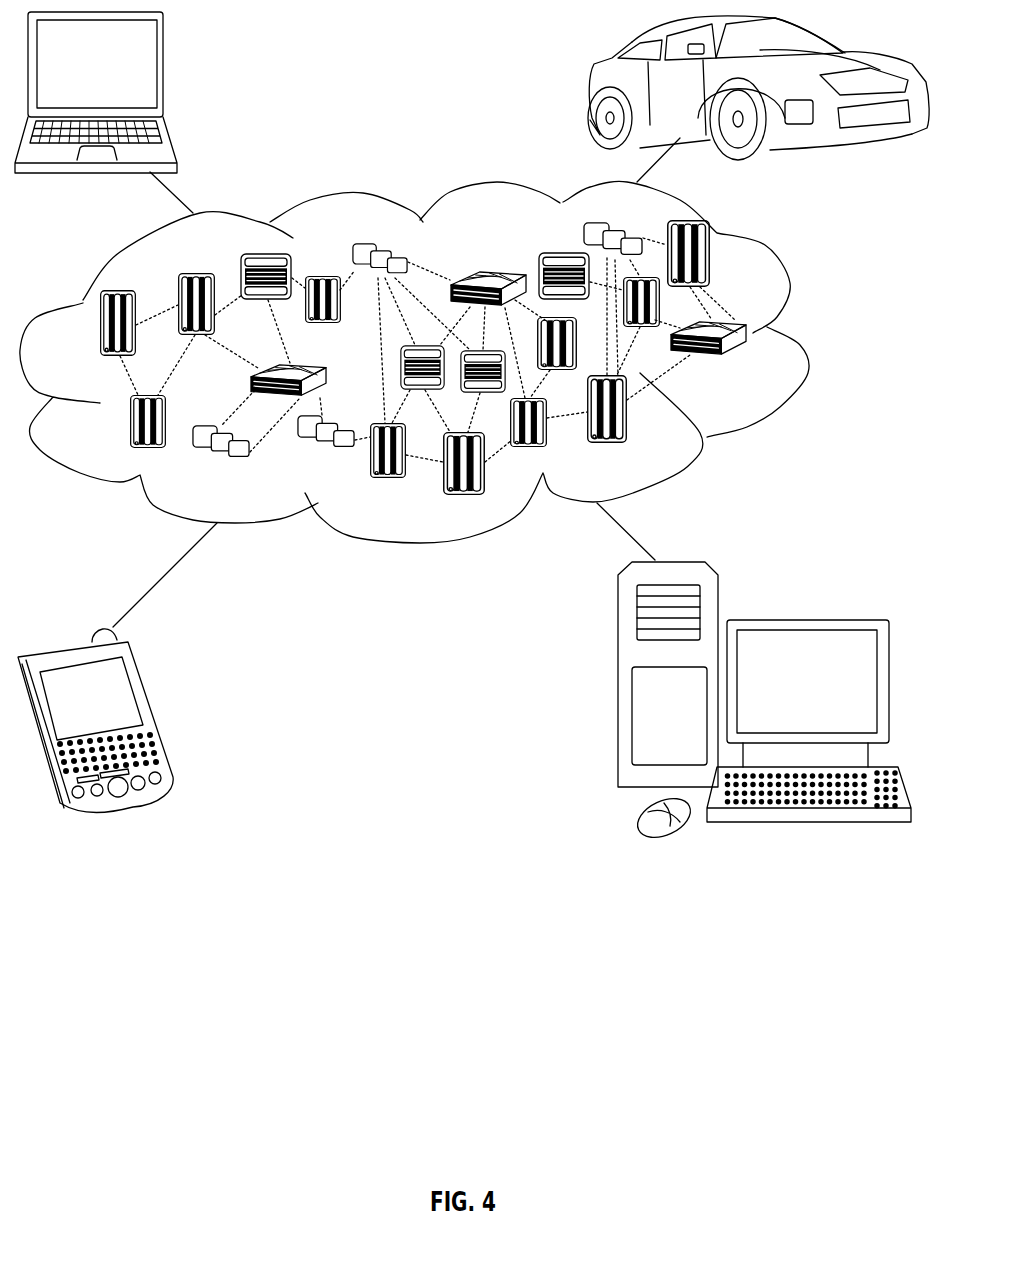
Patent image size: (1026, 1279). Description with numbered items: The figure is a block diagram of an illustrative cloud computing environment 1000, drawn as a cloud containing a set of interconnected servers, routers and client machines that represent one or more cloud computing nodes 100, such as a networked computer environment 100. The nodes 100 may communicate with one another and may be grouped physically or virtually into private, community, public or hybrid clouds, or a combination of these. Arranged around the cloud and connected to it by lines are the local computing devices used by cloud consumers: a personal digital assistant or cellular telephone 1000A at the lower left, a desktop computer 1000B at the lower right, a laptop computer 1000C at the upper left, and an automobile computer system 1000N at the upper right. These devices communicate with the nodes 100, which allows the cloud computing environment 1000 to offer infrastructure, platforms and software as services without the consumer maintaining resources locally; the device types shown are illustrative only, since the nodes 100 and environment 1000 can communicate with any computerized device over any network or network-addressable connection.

The cloud computing environment 1000 is at (806, 341).
The cloud computing nodes 100 is at (752, 366).
The personal digital assistant (PDA) or cellular telephone 1000A is at (157, 711).
The desktop computer 1000B is at (802, 620).
The laptop computer 1000C is at (164, 72).
The automobile computer system 1000N is at (590, 86).